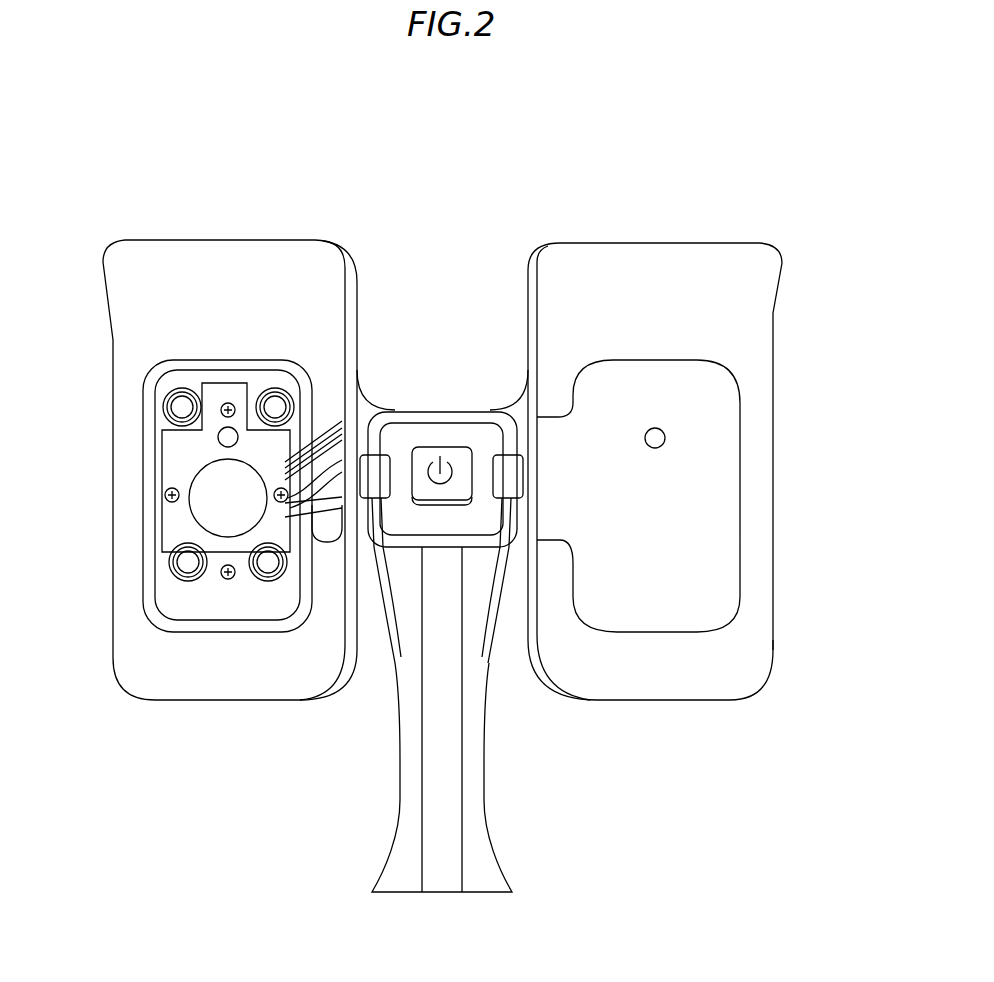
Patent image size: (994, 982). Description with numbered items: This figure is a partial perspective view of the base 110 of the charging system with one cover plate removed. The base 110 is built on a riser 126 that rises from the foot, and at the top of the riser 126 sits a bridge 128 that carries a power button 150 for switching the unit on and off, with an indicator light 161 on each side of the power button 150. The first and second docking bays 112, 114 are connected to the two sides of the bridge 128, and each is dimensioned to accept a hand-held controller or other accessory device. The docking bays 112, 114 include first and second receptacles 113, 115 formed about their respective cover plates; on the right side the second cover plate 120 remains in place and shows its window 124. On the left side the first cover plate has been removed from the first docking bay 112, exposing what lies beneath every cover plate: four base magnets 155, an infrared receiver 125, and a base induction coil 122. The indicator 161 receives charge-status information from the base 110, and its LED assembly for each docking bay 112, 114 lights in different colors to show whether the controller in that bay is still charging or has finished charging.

The base 110 is at (631, 145).
The first docking bay 112 is at (188, 235).
The first receptacle 113 is at (122, 687).
The second docking bay 114 is at (710, 235).
The second receptacle 115 is at (755, 684).
The second cover plate 120 is at (684, 567).
The base induction coil 122 is at (193, 513).
The window 124 is at (666, 436).
The infrared (IR) receiver 125 is at (218, 437).
The riser 126 is at (497, 832).
The bridge 128 is at (420, 405).
The power button 150 is at (451, 447).
The base magnets 155 is at (273, 392).
The indicator light 161 is at (400, 664).